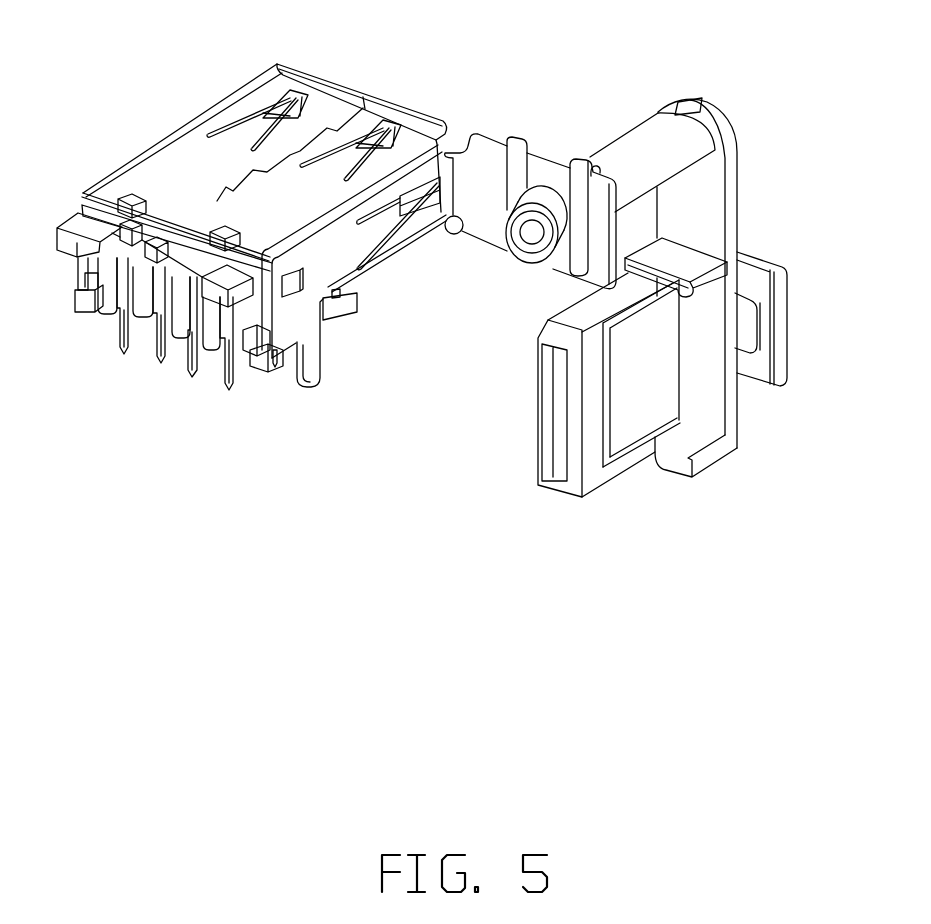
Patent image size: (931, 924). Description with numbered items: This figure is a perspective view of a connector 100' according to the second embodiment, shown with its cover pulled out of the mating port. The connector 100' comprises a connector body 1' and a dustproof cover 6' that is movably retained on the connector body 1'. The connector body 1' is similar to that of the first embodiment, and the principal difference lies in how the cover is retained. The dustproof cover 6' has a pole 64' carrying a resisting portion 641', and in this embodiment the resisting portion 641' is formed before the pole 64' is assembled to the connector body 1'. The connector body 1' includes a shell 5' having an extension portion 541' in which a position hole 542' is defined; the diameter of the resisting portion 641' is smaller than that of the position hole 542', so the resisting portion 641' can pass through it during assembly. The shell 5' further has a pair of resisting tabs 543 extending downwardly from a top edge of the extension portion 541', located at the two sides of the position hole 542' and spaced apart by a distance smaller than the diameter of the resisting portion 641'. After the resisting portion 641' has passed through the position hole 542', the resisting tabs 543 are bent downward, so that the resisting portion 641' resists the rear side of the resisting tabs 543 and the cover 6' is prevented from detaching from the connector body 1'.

The connector 100' is at (252, 209).
The connector body 1' is at (264, 225).
The shell 5' is at (170, 292).
The extension portion 541' is at (506, 195).
The position hole 542' is at (549, 141).
The resisting tabs 543 is at (510, 246).
The resisting portion 641' is at (511, 281).
The pole 64' is at (663, 230).
The dustproof cover 6' is at (690, 255).